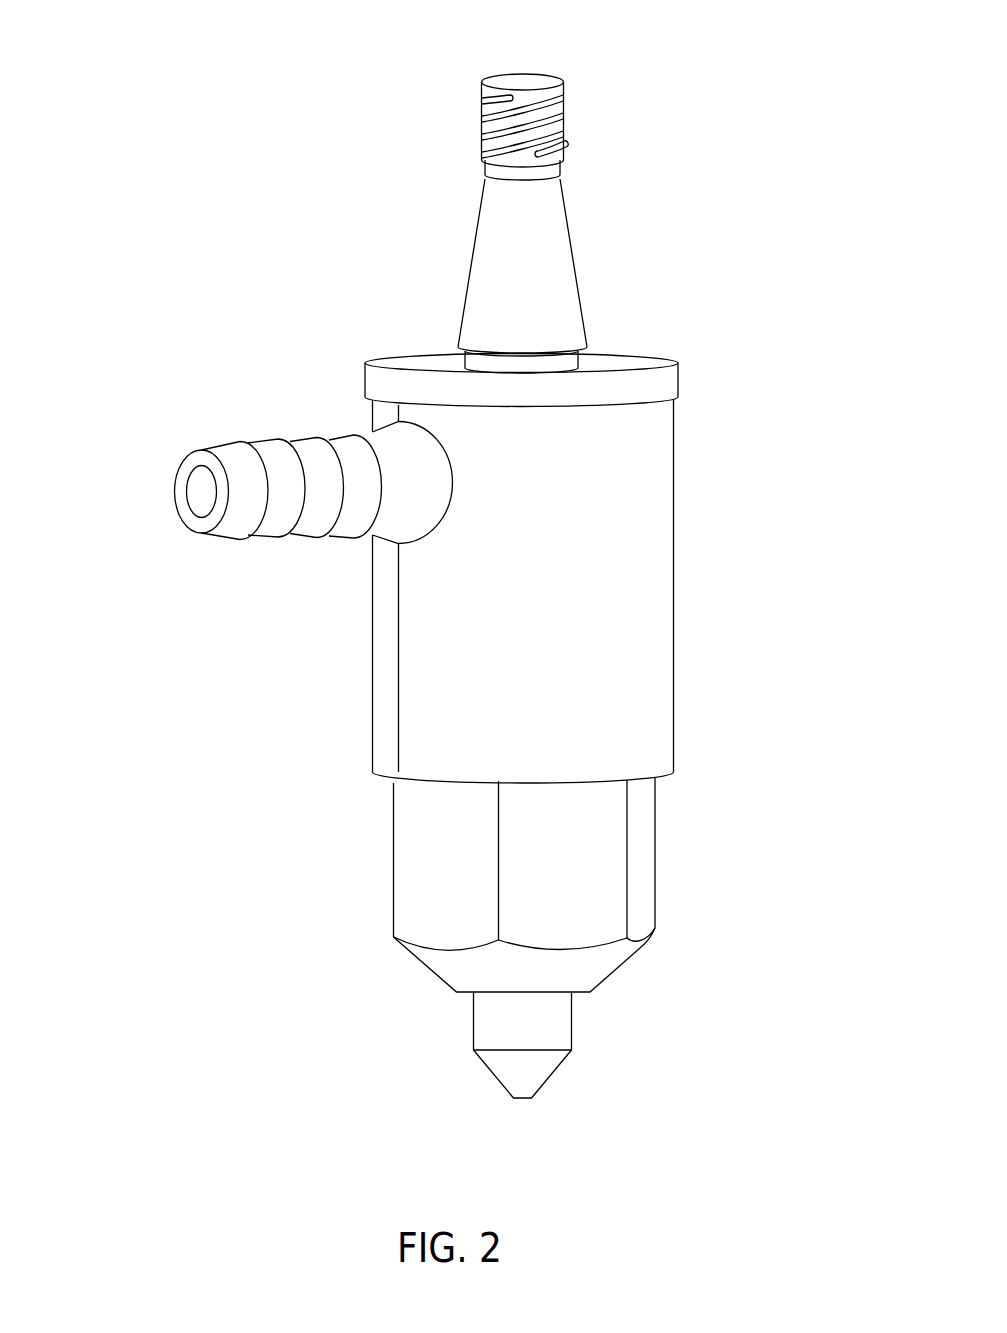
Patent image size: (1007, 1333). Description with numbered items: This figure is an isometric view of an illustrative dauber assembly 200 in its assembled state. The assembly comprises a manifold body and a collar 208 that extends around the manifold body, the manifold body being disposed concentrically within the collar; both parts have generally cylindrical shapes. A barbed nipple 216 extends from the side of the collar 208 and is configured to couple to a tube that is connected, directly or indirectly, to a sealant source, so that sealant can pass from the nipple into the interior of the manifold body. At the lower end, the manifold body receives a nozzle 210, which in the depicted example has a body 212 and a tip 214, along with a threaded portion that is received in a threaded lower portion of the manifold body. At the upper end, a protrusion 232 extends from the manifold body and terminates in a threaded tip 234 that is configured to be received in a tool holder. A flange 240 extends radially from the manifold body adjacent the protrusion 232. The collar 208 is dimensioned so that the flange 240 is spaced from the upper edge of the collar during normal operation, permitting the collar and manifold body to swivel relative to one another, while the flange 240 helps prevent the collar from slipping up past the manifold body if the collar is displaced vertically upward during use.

The dauber assembly 200 is at (162, 37).
The collar 208 is at (648, 657).
The nozzle 210 is at (647, 985).
The body 212 is at (648, 842).
The tip 214 is at (558, 1022).
The barbed nipple 216 is at (227, 457).
The protrusion 232 is at (550, 287).
The threaded tip 234 is at (556, 121).
The flange 240 is at (667, 385).